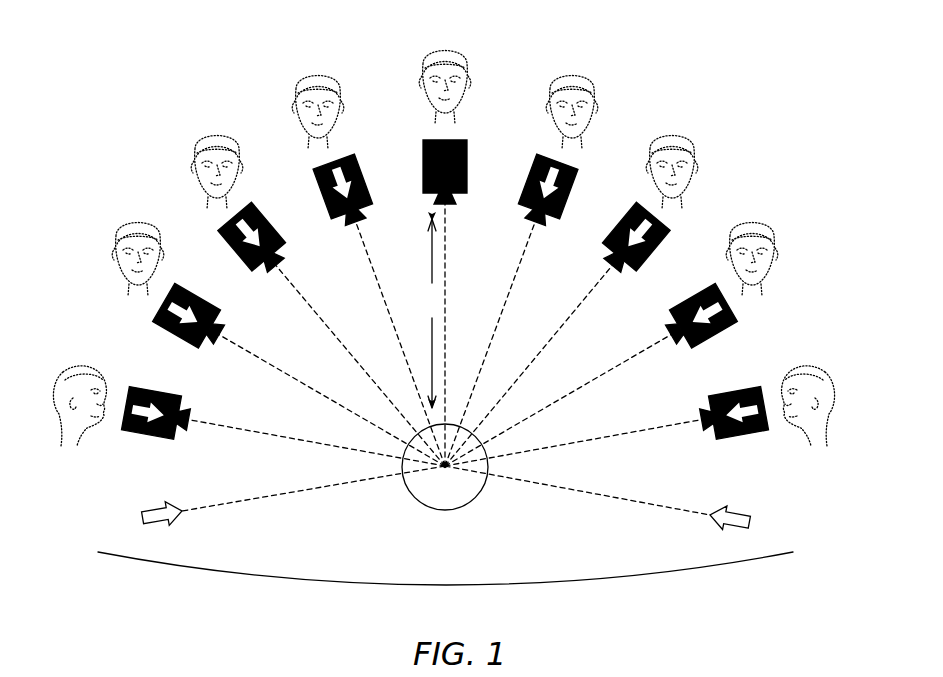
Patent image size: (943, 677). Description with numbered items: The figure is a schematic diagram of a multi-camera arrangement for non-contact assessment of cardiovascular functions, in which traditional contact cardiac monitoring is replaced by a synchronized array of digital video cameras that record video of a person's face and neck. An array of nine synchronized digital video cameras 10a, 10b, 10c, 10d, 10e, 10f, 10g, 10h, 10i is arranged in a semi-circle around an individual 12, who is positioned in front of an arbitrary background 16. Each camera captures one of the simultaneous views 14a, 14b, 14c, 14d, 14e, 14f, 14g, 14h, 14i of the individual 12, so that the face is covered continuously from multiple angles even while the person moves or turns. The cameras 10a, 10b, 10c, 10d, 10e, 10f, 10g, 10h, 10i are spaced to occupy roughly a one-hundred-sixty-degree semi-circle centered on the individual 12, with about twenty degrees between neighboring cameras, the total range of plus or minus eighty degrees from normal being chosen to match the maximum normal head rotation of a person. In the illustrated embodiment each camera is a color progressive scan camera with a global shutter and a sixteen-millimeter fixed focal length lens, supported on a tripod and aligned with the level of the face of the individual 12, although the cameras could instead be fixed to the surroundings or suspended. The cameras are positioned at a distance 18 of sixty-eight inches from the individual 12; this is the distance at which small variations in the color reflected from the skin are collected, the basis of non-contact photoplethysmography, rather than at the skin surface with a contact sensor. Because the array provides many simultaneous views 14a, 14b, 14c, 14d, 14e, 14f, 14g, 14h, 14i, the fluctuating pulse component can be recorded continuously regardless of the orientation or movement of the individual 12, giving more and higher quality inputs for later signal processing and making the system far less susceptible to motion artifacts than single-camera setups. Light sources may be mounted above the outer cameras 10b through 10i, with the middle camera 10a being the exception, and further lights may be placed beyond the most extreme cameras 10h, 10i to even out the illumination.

The digital video camera 10a is at (470, 165).
The digital video camera 10b is at (562, 192).
The digital video camera 10c is at (325, 192).
The digital video camera 10d is at (655, 270).
The digital video camera 10e is at (238, 268).
The digital video camera 10f is at (710, 340).
The digital video camera 10g is at (178, 340).
The digital video camera 10h is at (740, 438).
The digital video camera 10i is at (150, 438).
The individual 12 is at (458, 510).
The simultaneous view 14a is at (477, 60).
The simultaneous view 14b is at (612, 100).
The simultaneous view 14c is at (282, 97).
The simultaneous view 14d is at (714, 158).
The simultaneous view 14e is at (183, 153).
The simultaneous view 14f is at (789, 258).
The simultaneous view 14g is at (103, 250).
The simultaneous view 14h is at (806, 350).
The simultaneous view 14i is at (73, 350).
The arbitrary background 16 is at (627, 575).
The distance 18 is at (429, 313).